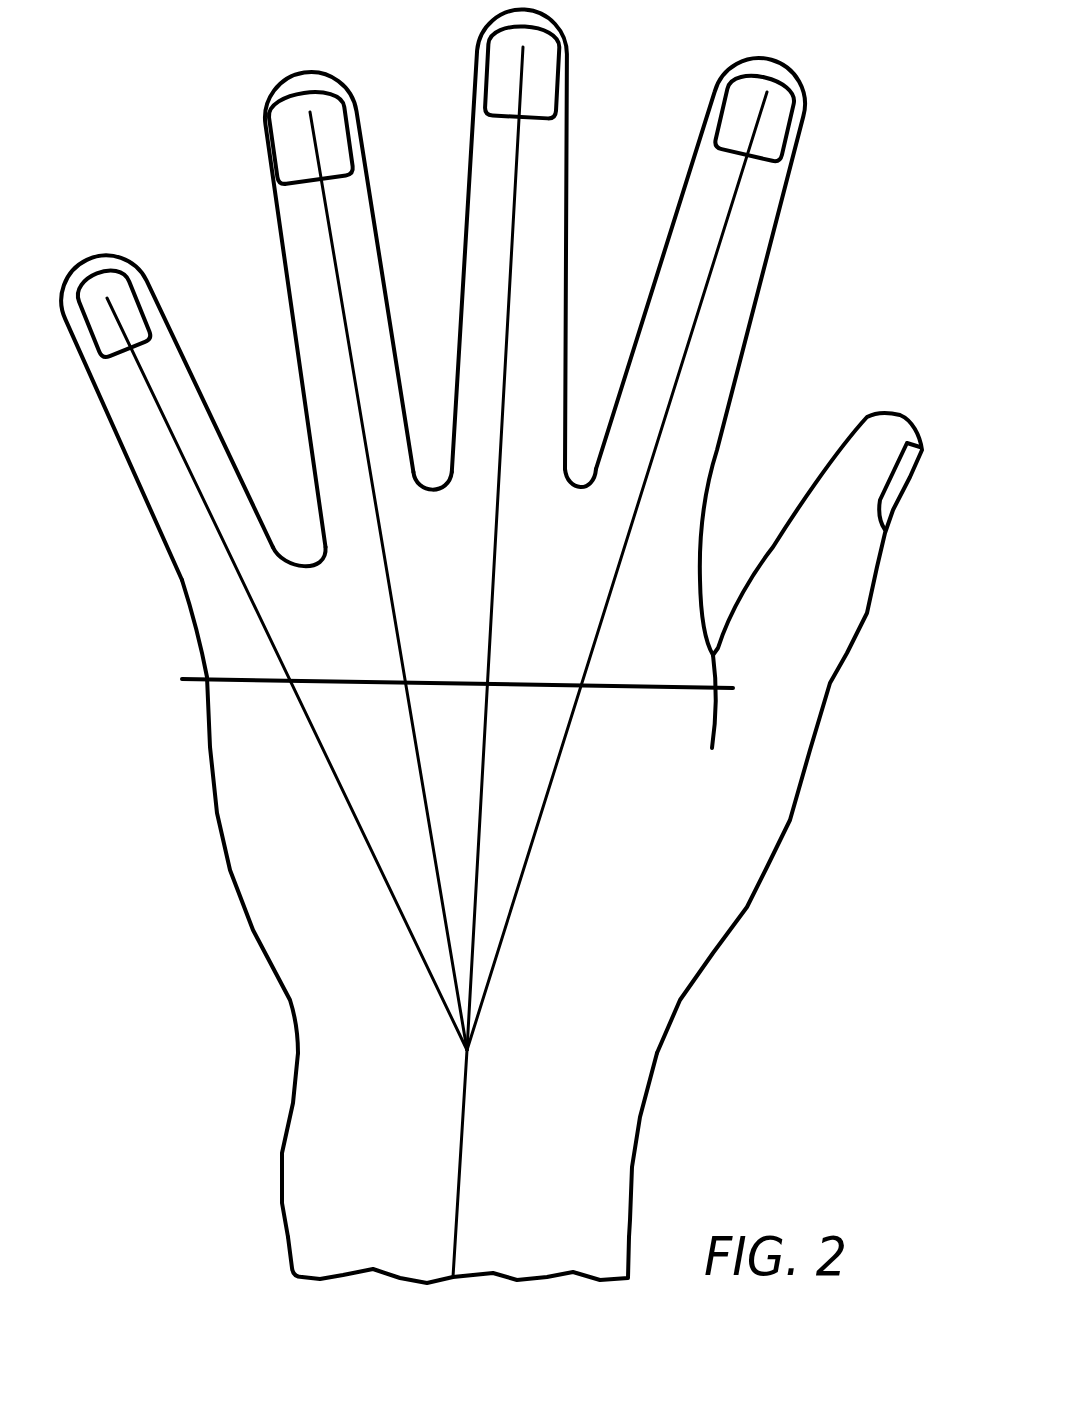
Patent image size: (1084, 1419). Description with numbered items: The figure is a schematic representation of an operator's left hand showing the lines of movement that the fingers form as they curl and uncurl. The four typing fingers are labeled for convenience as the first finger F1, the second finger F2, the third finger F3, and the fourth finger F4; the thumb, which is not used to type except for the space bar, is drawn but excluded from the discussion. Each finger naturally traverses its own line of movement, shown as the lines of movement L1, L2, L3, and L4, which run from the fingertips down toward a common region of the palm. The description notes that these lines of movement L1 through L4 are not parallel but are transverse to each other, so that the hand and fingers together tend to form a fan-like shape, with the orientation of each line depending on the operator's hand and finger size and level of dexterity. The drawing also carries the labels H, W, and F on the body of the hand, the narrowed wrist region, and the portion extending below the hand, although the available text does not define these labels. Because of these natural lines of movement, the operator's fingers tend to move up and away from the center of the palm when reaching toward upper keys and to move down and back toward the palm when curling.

The first finger F1 is at (798, 88).
The second finger F2 is at (556, 32).
The third finger F3 is at (335, 88).
The fourth finger F4 is at (85, 258).
The line of movement L1 is at (692, 332).
The line of movement L2 is at (508, 340).
The line of movement L3 is at (352, 349).
The line of movement L4 is at (158, 400).
The hand H is at (227, 863).
The wrist W is at (297, 1050).
The forearm F is at (290, 1237).